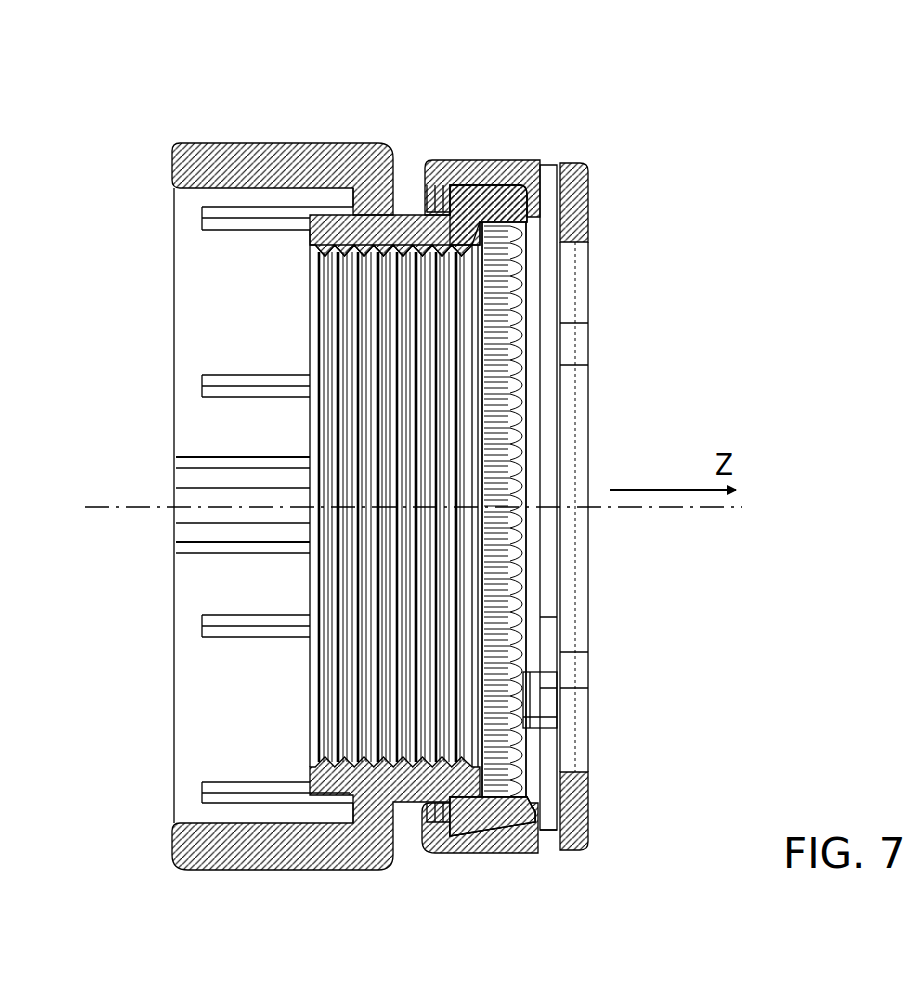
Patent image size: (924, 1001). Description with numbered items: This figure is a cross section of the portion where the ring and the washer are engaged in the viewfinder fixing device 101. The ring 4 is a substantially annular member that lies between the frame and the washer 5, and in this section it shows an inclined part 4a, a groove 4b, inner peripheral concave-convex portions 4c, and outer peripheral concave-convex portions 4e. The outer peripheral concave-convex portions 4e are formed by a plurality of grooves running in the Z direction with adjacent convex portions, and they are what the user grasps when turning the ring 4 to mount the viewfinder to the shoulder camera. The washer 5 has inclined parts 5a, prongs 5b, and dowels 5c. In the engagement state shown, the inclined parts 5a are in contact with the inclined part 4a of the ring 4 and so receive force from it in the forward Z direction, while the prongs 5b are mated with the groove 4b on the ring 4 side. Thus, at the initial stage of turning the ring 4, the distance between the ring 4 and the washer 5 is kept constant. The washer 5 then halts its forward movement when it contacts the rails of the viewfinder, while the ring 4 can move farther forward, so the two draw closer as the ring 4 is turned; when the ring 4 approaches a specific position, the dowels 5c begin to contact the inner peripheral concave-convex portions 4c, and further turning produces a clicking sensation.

The viewfinder fixing device 101 is at (584, 99).
The ring 4 is at (370, 462).
The inclined part 4a is at (500, 187).
The groove 4b is at (413, 215).
The inner peripheral concave-convex portions 4c is at (500, 415).
The outer peripheral concave-convex portions 4e is at (241, 147).
The washer 5 is at (550, 466).
The inclined parts 5a is at (514, 190).
The prongs 5b is at (443, 180).
The dowels 5c is at (537, 697).